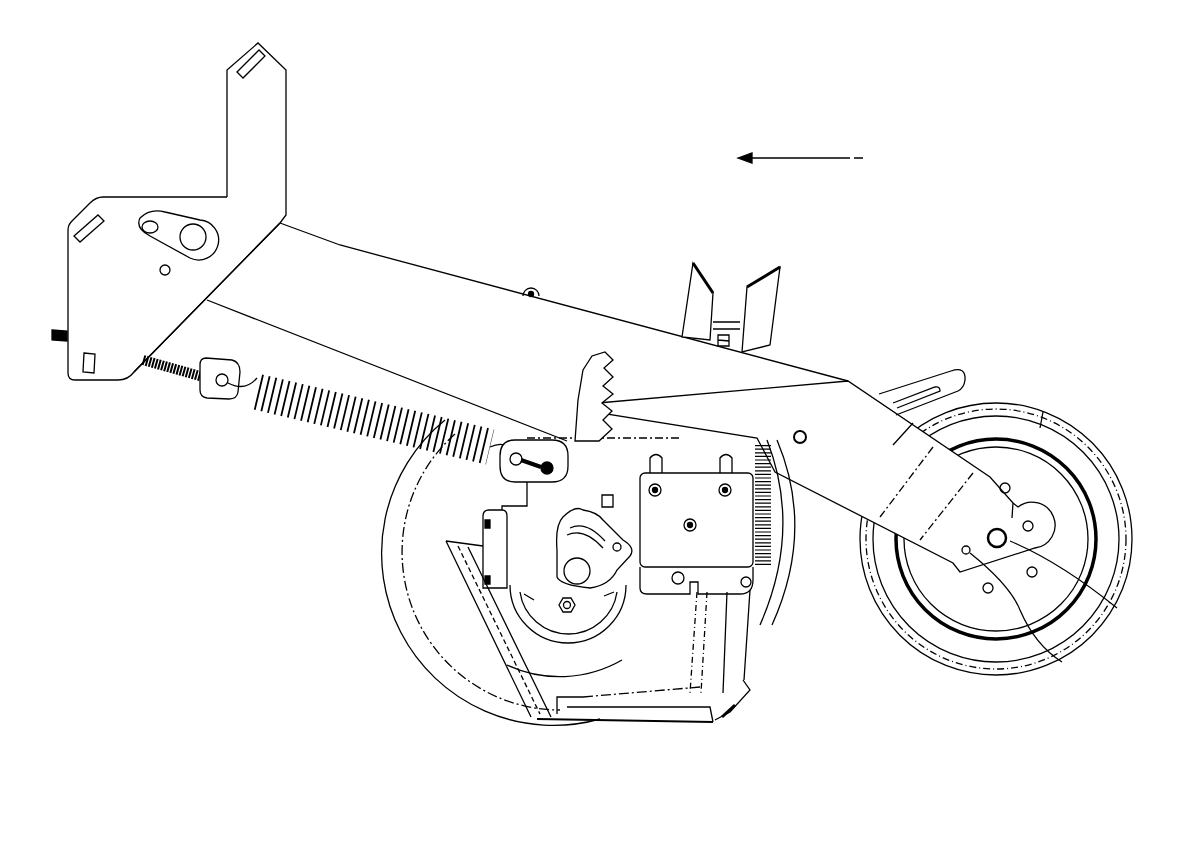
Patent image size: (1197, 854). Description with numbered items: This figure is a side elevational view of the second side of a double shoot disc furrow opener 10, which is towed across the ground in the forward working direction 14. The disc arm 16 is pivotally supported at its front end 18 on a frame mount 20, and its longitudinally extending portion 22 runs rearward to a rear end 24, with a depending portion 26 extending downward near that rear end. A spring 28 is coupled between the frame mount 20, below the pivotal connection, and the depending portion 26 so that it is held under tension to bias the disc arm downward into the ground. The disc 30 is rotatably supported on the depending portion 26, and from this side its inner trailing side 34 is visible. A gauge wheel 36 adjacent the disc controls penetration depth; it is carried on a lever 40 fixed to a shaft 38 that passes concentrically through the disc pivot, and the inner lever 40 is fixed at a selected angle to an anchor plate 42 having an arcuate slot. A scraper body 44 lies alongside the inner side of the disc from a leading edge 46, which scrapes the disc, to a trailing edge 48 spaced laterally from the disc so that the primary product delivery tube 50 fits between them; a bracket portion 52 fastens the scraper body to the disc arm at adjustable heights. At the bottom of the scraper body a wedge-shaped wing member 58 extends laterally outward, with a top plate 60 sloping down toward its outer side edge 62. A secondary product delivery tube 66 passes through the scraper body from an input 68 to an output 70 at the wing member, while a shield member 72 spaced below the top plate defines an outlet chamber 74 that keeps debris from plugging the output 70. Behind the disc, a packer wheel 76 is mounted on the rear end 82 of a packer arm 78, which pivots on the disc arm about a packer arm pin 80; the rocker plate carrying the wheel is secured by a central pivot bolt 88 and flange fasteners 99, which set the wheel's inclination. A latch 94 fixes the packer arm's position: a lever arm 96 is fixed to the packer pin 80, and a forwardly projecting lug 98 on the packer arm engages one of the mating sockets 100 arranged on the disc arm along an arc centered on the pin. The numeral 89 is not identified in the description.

The double shoot disc furrow opener 10 is at (597, 152).
The forward working direction 14 is at (808, 159).
The disc arm 16 is at (453, 268).
The front end 18 is at (300, 243).
The frame mount 20 is at (268, 118).
The longitudinally extending portion 22 is at (561, 337).
The rear end 24 is at (786, 367).
The depending portion 26 is at (500, 491).
The spring 28 is at (300, 422).
The disc 30 is at (470, 655).
The inner trailing side 34 is at (437, 588).
The gauge wheel 36 is at (778, 563).
The shaft 38 is at (557, 590).
The lever 40 is at (564, 571).
The anchor plate 42 is at (483, 528).
The scraper body 44 is at (530, 722).
The leading edge 46 is at (485, 692).
The trailing edge 48 is at (740, 658).
The primary product delivery tube 50 is at (688, 300).
The bracket portion 52 is at (730, 534).
The wing member 58 is at (668, 727).
The top plate 60 is at (587, 703).
The outer side edge 62 is at (643, 723).
The secondary product delivery tube 66 is at (738, 628).
The input 68 is at (763, 272).
The output 70 is at (723, 724).
The shield member 72 is at (733, 718).
The outlet chamber 74 is at (746, 708).
The packer wheel 76 is at (1042, 414).
The packer arm 78 is at (975, 400).
The packer arm pin 80 is at (804, 431).
The rear end 82 is at (1019, 503).
The central pivot bolt 88 is at (1117, 607).
The hub hole 89 is at (1037, 523).
The latch 94 is at (879, 386).
The lever arm 96 is at (963, 368).
The lug 98 is at (638, 405).
The flange fasteners 99 is at (1062, 662).
The mating sockets 100 is at (576, 389).